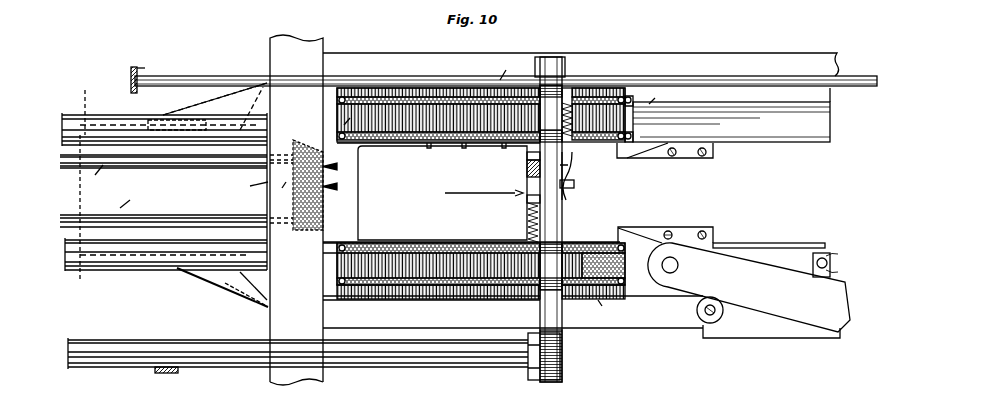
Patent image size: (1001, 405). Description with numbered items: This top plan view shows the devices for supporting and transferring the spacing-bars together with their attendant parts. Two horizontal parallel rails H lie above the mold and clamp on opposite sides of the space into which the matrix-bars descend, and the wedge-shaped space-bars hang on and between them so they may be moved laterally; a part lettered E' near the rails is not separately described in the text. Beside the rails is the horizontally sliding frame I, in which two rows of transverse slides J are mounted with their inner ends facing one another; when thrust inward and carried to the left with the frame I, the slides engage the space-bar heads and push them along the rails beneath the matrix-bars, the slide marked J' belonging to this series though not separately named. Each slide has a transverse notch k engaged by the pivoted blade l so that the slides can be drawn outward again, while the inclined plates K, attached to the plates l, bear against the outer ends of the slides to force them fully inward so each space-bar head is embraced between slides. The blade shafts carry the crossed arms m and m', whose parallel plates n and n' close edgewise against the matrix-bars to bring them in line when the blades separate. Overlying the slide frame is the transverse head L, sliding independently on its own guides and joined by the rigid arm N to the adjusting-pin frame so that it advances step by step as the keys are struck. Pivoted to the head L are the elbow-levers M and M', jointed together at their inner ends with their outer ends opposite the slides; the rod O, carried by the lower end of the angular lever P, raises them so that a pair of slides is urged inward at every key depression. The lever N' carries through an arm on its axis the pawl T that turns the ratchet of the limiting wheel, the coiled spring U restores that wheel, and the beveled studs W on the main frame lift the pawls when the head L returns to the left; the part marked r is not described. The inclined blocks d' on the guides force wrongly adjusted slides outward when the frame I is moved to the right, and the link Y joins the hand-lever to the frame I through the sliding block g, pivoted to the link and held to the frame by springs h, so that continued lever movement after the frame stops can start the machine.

The angular lever P is at (145, 59).
The rod O is at (504, 77).
The inclined plates K is at (239, 279).
The pivoted blade l is at (120, 270).
The parallel plate n is at (94, 177).
The parallel plate n' is at (122, 205).
The horizontal parallel rails H is at (164, 192).
The upwardly-extending arm m is at (251, 188).
The upwardly-extending arm m' is at (280, 192).
The wedge E' is at (308, 185).
The beveled studs W is at (337, 173).
The transverse notch k is at (498, 189).
The transverse slides J is at (481, 193).
The comb spring J' is at (601, 265).
The sliding frame I is at (332, 257).
The pawl T is at (520, 158).
The lever N' is at (521, 171).
The elbow-lever M' is at (573, 175).
The stop r is at (525, 198).
The coiled spring U is at (523, 222).
The transverse head L is at (548, 223).
The elbow-lever M is at (642, 231).
The inclined blocks d' is at (665, 162).
The link Y is at (749, 290).
The sliding block g is at (812, 265).
The springs h is at (844, 272).
The rigid arm N is at (177, 376).